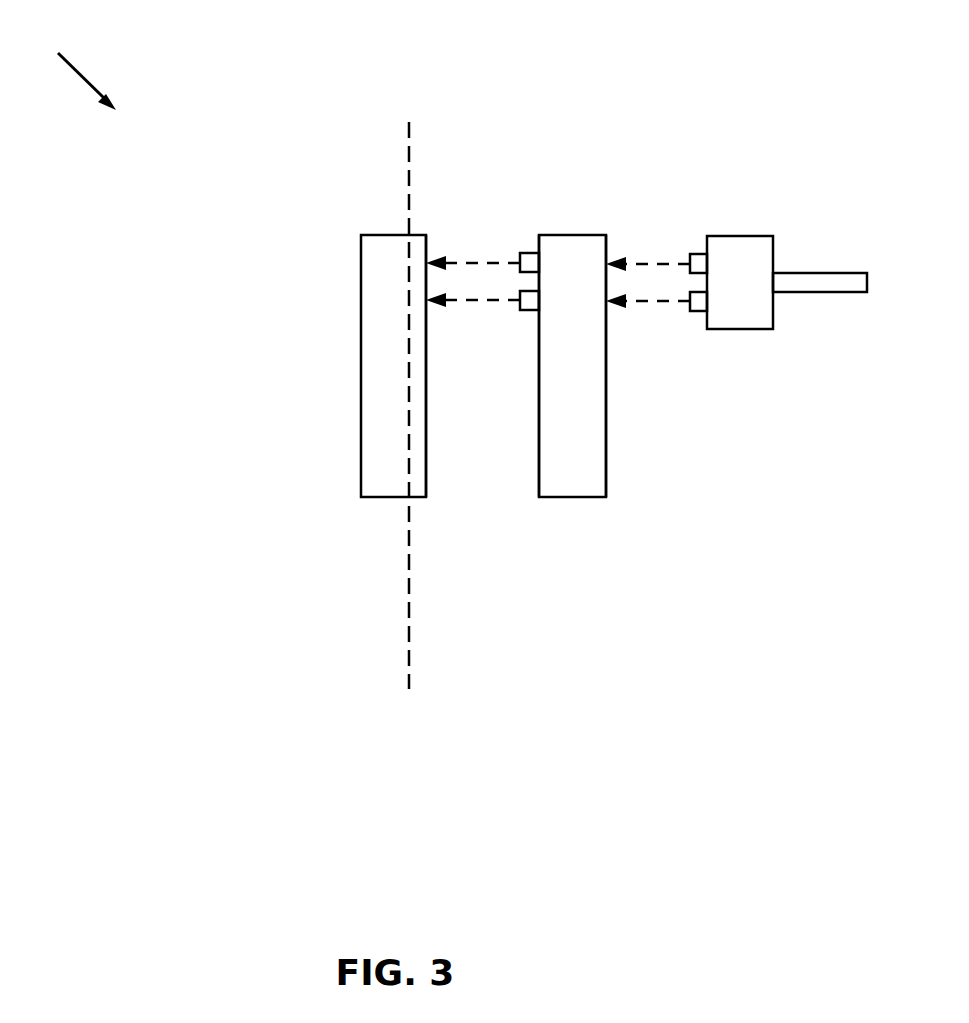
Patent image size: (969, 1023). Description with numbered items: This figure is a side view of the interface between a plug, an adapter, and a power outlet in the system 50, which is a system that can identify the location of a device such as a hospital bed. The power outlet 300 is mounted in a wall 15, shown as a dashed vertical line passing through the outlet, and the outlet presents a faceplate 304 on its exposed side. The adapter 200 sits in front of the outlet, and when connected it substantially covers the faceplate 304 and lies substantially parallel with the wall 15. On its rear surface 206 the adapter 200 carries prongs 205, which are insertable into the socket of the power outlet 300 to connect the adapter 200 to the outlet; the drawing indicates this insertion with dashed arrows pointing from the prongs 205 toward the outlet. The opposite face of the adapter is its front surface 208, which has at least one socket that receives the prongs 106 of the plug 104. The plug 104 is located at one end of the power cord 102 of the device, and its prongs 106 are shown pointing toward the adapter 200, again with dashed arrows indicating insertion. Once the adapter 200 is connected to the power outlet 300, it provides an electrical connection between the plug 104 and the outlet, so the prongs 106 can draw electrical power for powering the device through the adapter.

The system 50 is at (71, 64).
The wall 15 is at (409, 156).
The power outlet 300 is at (379, 291).
The faceplate 304 is at (416, 481).
The adapter 200 is at (575, 258).
The prongs 205 is at (533, 257).
The rear surface 206 is at (539, 442).
The front surface 208 is at (604, 465).
The plug 104 is at (739, 254).
The power cord 102 is at (820, 290).
The prongs 106 is at (699, 251).